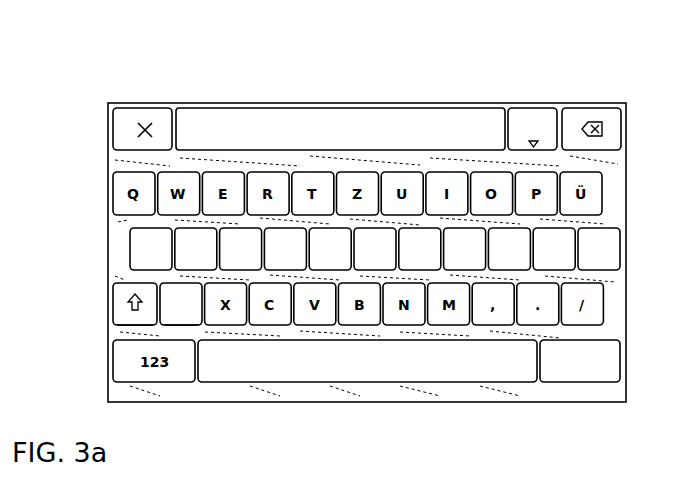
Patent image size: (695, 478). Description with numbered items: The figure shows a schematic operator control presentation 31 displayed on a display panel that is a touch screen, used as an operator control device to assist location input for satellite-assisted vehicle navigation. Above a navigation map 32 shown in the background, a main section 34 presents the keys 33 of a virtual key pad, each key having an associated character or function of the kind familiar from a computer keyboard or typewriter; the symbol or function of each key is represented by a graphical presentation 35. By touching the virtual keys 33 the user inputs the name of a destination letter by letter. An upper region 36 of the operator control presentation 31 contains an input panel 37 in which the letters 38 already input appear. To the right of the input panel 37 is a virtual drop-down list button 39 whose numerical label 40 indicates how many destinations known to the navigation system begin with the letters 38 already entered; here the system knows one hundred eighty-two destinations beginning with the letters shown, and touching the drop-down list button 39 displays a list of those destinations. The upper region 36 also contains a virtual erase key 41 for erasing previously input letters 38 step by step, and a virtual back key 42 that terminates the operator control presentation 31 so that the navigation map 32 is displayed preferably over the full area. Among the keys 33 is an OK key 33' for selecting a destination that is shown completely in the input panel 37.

The operator control presentation 31 is at (86, 80).
The navigation map 32 is at (120, 227).
The keys 33 is at (131, 347).
The OK key 33' is at (580, 389).
The main section 34 is at (58, 172).
The graphical presentation 35 is at (177, 295).
The upper region 36 is at (58, 105).
The input panel 37 is at (293, 118).
The letters 38 is at (188, 120).
The drop-down list button 39 is at (518, 109).
The numerical label 40 is at (537, 118).
The erase key 41 is at (594, 109).
The back key 42 is at (147, 108).